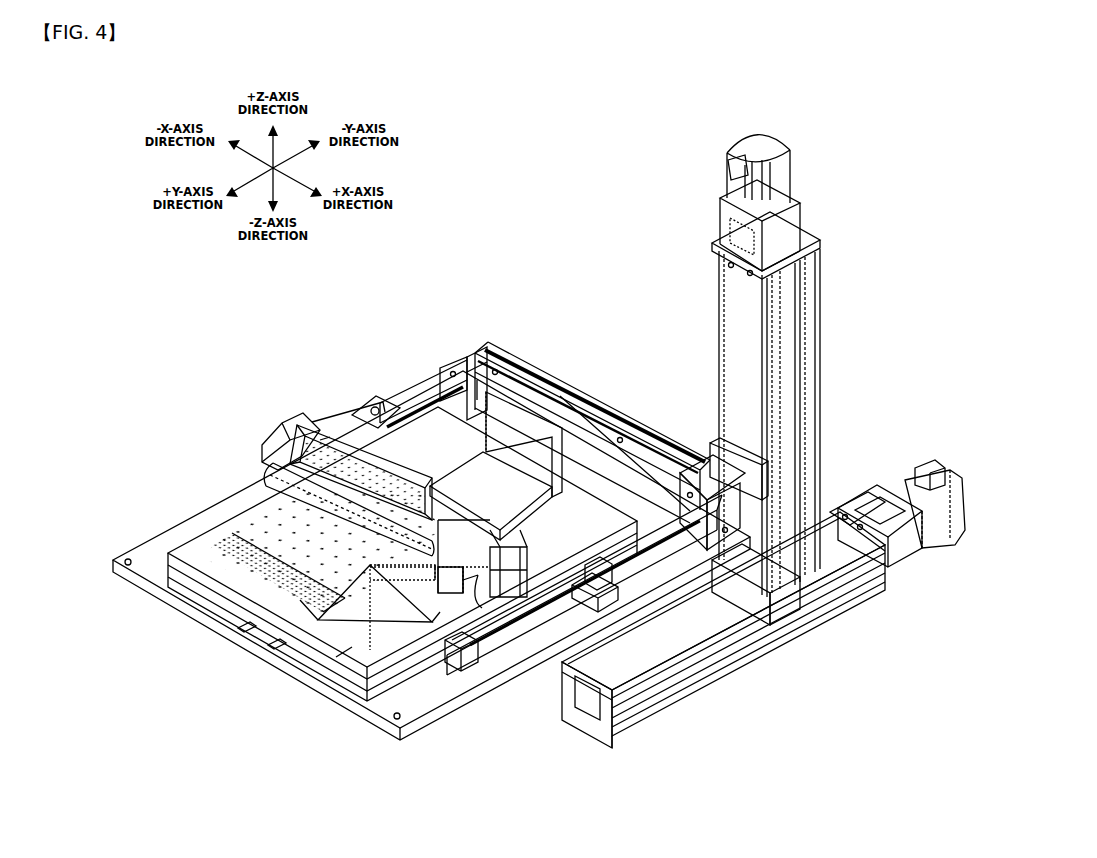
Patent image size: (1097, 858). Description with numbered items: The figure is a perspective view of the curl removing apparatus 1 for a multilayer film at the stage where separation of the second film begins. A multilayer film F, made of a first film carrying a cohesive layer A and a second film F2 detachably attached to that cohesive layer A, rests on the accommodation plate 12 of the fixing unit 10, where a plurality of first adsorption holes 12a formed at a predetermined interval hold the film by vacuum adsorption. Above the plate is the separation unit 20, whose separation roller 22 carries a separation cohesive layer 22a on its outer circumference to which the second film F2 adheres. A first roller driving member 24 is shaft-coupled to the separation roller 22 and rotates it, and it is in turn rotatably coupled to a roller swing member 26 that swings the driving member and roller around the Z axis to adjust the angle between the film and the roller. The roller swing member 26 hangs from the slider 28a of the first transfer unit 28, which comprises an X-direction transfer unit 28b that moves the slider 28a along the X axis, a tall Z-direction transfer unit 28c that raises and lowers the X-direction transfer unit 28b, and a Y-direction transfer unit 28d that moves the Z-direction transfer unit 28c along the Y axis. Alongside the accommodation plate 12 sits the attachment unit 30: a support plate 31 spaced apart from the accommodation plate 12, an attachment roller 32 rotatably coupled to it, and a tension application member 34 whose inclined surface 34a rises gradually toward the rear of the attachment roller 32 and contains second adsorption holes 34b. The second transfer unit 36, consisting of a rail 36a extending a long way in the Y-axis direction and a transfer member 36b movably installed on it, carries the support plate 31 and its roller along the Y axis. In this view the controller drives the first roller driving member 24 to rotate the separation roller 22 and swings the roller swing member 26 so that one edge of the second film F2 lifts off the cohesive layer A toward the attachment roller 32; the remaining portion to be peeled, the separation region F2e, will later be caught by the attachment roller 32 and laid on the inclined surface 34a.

The curl removing apparatus 1 is at (229, 345).
The fixing unit 10 is at (209, 638).
The accommodation plate 12 is at (186, 575).
The first adsorption holes 12a is at (228, 568).
The separation unit 20 is at (431, 608).
The separation roller 22 is at (388, 657).
The separation cohesive layer 22a is at (372, 655).
The first roller driving member 24 is at (512, 598).
The roller swing member 26 is at (478, 612).
The first transfer unit 28 is at (697, 441).
The slider 28a is at (526, 450).
The X-direction transfer unit 28b is at (599, 428).
The Z-direction transfer unit 28c is at (745, 306).
The Y-direction transfer unit 28d is at (848, 584).
The attachment unit 30 is at (317, 447).
The support plate 31 is at (292, 440).
The attachment roller 32 is at (280, 476).
The tension application member 34 is at (318, 412).
The inclined surface 34a is at (374, 400).
The second adsorption holes 34b is at (350, 425).
The second transfer unit 36 is at (556, 552).
The rail 36a is at (440, 370).
The transfer member 36b is at (615, 596).
The multilayer film F is at (256, 634).
The second film F2 is at (298, 626).
The separation region F2e is at (332, 624).
The cohesive layer A is at (341, 651).